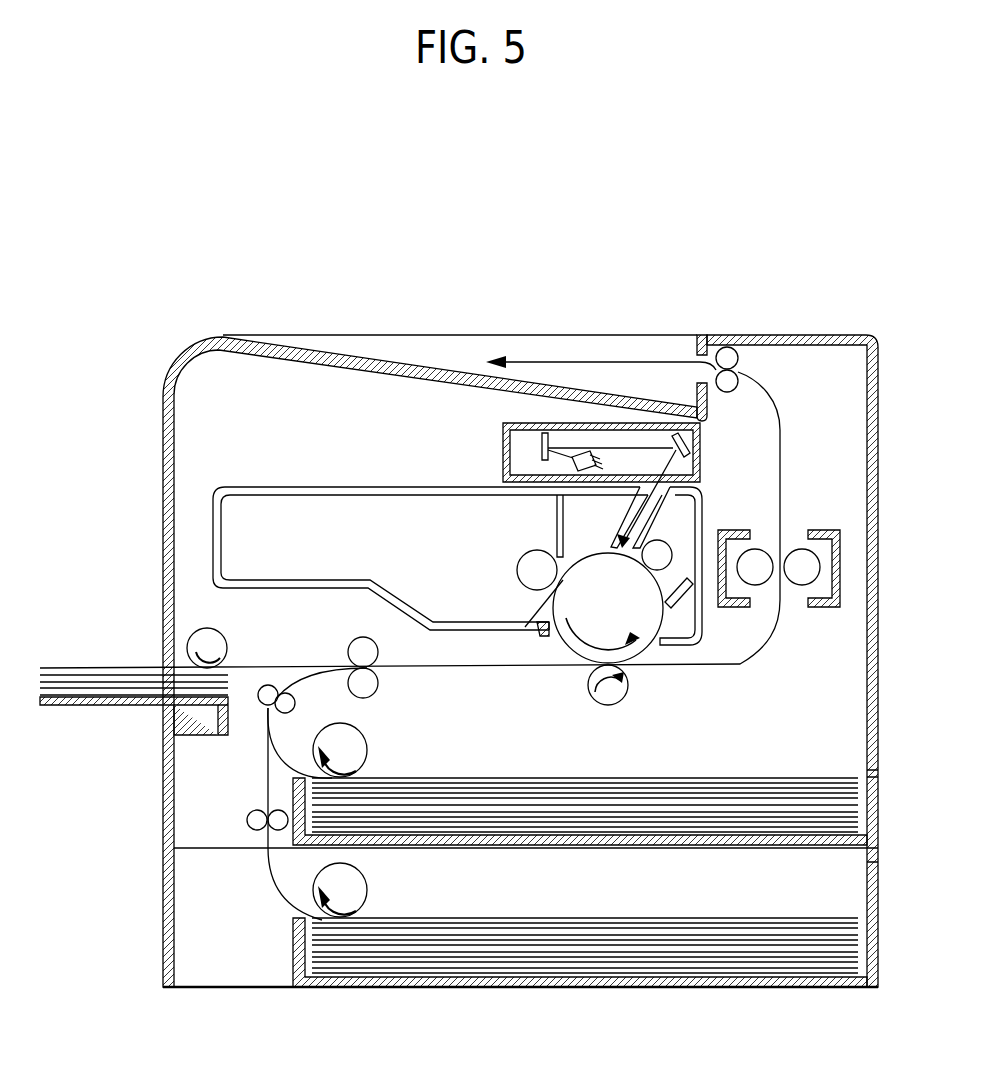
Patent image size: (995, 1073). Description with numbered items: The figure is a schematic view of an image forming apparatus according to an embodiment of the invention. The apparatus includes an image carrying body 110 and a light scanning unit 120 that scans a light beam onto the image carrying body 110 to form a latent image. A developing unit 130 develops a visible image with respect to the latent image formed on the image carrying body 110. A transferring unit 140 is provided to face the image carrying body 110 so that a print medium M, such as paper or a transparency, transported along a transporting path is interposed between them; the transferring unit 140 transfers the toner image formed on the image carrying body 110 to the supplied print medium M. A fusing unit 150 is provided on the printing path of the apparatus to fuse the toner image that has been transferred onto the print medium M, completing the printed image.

The image carrying body 110 is at (572, 665).
The light scanning unit 120 is at (528, 423).
The developing unit 130 is at (313, 487).
The transferring unit 140 is at (608, 705).
The fusing unit 150 is at (798, 523).
The print medium M is at (732, 778).